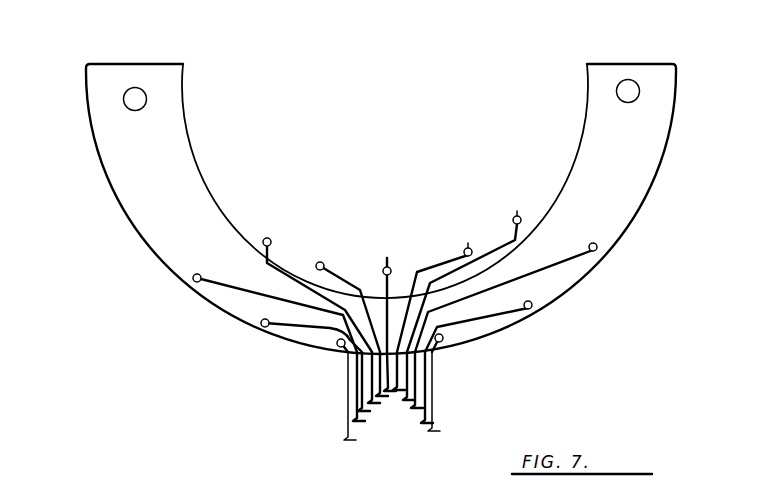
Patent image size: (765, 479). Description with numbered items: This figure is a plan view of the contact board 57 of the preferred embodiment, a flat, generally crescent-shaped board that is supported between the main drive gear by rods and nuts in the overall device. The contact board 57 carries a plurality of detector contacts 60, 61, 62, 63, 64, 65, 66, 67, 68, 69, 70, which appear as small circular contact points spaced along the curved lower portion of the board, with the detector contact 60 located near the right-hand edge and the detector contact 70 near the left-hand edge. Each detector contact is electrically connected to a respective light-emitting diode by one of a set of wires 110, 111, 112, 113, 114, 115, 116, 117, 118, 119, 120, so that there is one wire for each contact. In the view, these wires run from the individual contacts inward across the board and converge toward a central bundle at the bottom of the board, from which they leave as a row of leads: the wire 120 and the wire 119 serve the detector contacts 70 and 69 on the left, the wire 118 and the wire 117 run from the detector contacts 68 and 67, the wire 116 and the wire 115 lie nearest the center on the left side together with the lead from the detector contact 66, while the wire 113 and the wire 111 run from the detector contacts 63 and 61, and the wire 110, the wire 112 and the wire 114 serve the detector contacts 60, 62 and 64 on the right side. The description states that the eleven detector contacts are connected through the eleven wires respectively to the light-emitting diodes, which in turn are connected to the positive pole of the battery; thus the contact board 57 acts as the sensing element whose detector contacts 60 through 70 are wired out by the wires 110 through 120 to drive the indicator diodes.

The contact board 57 is at (381, 209).
The detector contact 60 is at (621, 239).
The detector contact 61 is at (521, 218).
The detector contact 62 is at (515, 362).
The detector contact 63 is at (442, 281).
The detector contact 64 is at (473, 382).
The detector contact 65 is at (434, 258).
The detector contact 66 is at (302, 389).
The detector contact 67 is at (360, 302).
The detector contact 68 is at (286, 365).
The detector contact 69 is at (291, 296).
The detector contact 70 is at (240, 347).
The wire 110 is at (562, 262).
The wire 111 is at (521, 311).
The wire 112 is at (492, 316).
The wire 113 is at (430, 284).
The wire 114 is at (436, 392).
The wire 115 is at (384, 290).
The wire 116 is at (346, 396).
The wire 117 is at (343, 268).
The wire 118 is at (298, 327).
The wire 119 is at (264, 263).
The wire 120 is at (228, 288).